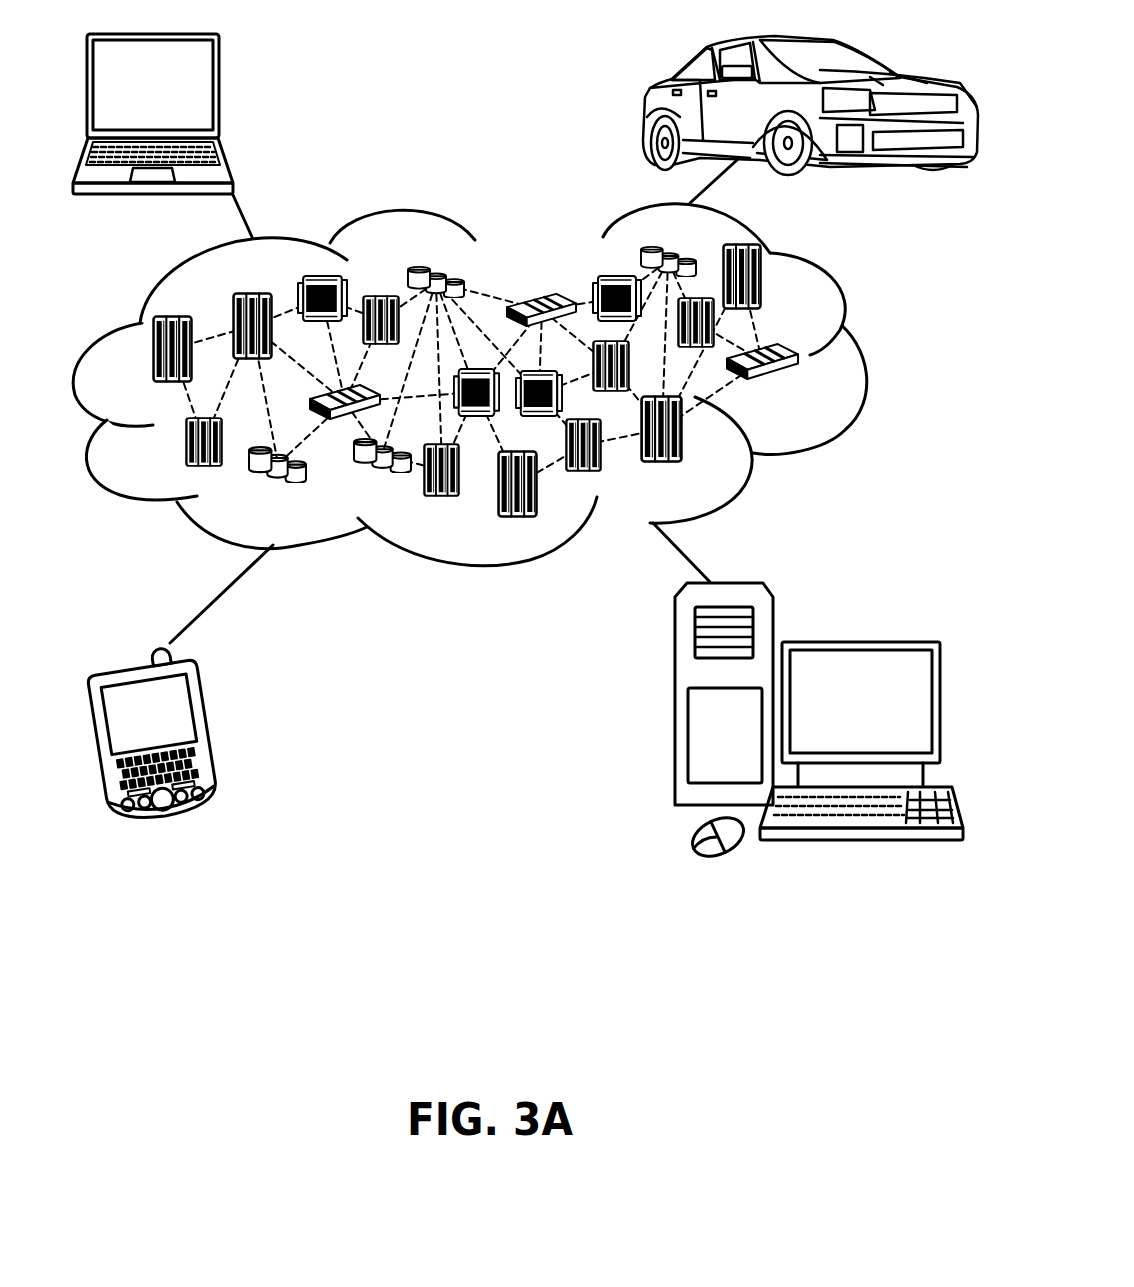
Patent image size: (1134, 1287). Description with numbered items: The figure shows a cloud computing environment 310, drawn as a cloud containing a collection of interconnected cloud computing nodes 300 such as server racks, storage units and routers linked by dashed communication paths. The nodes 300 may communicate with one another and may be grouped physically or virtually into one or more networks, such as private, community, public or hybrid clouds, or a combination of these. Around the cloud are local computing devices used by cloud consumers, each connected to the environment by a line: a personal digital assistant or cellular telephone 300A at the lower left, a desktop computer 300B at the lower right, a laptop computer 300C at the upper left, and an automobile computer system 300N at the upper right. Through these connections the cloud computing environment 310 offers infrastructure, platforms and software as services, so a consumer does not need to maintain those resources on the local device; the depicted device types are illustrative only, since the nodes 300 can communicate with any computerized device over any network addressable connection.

The cloud computing nodes 300 is at (525, 449).
The cloud computing environment 310 is at (858, 360).
The personal digital assistant (PDA) or cellular telephone 300A is at (211, 729).
The desktop computer 300B is at (857, 642).
The laptop computer 300C is at (220, 93).
The automobile computer system 300N is at (645, 110).